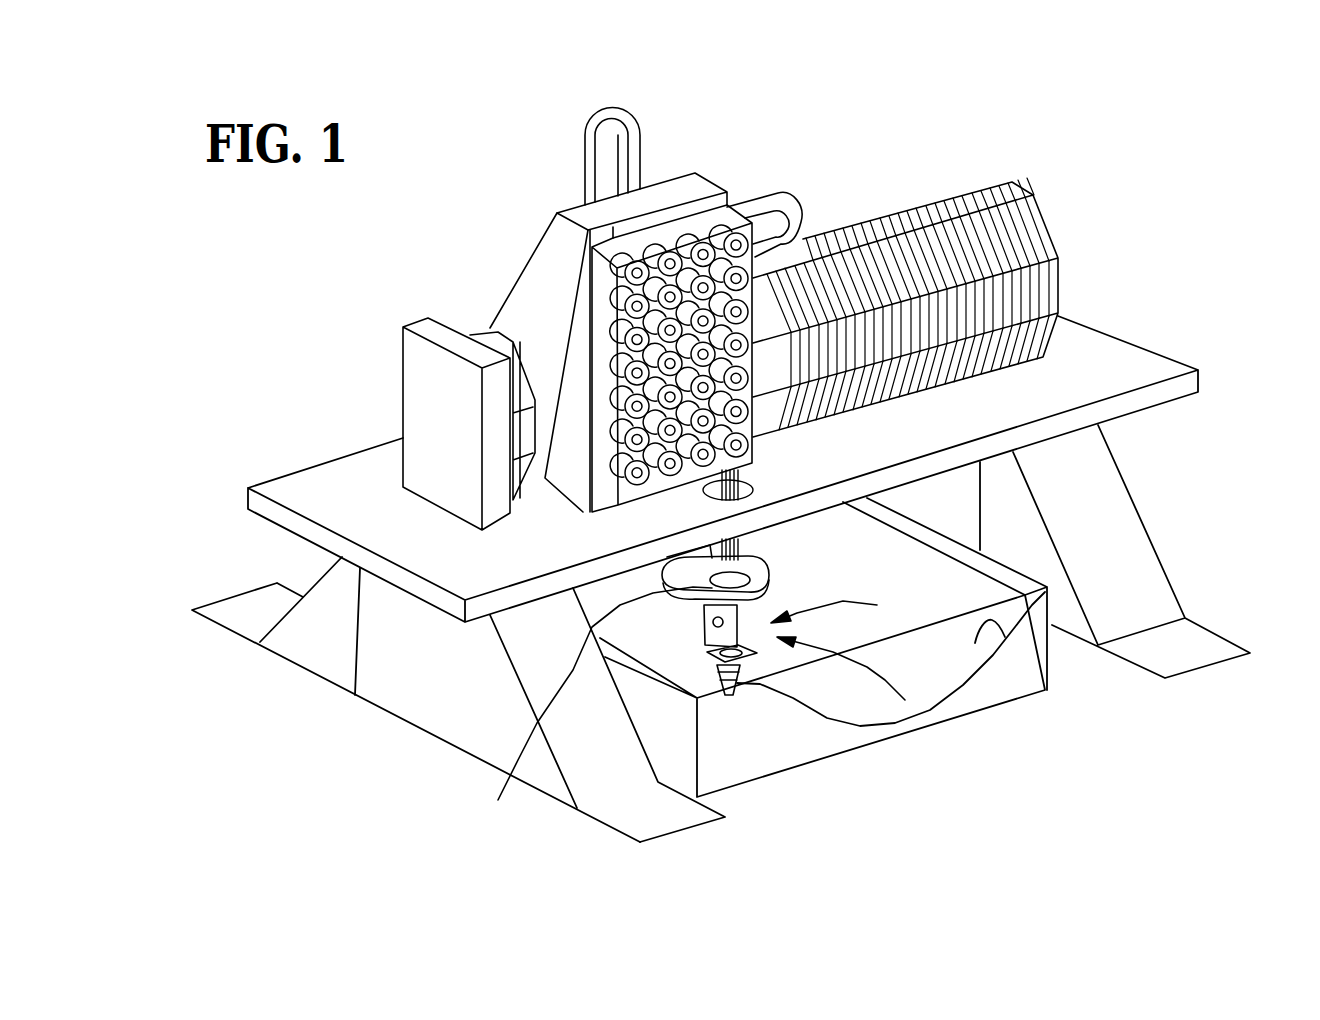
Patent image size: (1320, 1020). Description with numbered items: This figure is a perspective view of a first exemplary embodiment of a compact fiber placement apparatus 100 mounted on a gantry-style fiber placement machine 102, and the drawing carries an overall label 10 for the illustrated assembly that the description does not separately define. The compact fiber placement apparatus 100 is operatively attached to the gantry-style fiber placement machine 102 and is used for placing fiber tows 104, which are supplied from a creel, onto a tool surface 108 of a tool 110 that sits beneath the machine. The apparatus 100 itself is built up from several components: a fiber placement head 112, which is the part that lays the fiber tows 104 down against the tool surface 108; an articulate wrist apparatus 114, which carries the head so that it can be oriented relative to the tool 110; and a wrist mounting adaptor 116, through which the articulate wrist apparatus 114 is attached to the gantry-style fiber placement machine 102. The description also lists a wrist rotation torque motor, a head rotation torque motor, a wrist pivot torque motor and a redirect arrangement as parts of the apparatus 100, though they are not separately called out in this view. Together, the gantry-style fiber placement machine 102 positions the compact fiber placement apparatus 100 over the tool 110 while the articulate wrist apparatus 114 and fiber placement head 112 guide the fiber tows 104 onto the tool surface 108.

The fluid jet apparatus 10 is at (710, 173).
The compact fiber placement apparatus 100 is at (880, 670).
The gantry-style fiber placement machine 102 is at (1132, 552).
The fiber tows 104 is at (750, 580).
The tool surface 108 is at (1003, 640).
The tool 110 is at (750, 757).
The fiber placement head 112 is at (757, 682).
The articulate wrist apparatus 114 is at (848, 647).
The wrist mounting adaptor 116 is at (498, 800).